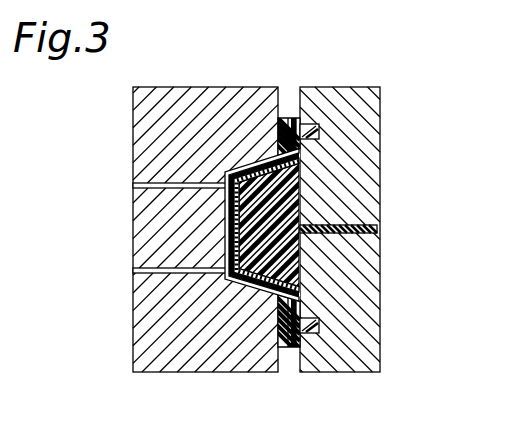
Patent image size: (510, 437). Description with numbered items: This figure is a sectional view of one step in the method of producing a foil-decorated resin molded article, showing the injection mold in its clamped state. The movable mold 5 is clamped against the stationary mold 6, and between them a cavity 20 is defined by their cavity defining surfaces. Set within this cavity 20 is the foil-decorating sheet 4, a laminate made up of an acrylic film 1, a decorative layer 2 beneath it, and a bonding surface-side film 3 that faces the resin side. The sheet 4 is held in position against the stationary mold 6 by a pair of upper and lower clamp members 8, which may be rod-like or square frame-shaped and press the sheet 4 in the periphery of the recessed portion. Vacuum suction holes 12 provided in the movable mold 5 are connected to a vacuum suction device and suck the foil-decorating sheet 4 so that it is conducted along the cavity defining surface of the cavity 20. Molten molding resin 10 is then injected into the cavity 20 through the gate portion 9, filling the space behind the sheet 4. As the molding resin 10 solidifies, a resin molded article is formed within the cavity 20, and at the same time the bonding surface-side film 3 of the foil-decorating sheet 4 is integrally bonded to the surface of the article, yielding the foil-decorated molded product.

The acrylic film 1 is at (276, 116).
The decorative layer 2 is at (295, 116).
The bonding surface-side film 3 is at (223, 27).
The foil-decorating sheet 4 is at (272, 177).
The movable mold 5 is at (142, 98).
The stationary mold 6 is at (375, 101).
The clamp member 8 is at (320, 131).
The gate portion 9 is at (348, 216).
The molding resin 10 is at (222, 237).
The vacuum suction hole 12 is at (222, 185).
The cavity 20 is at (215, 326).